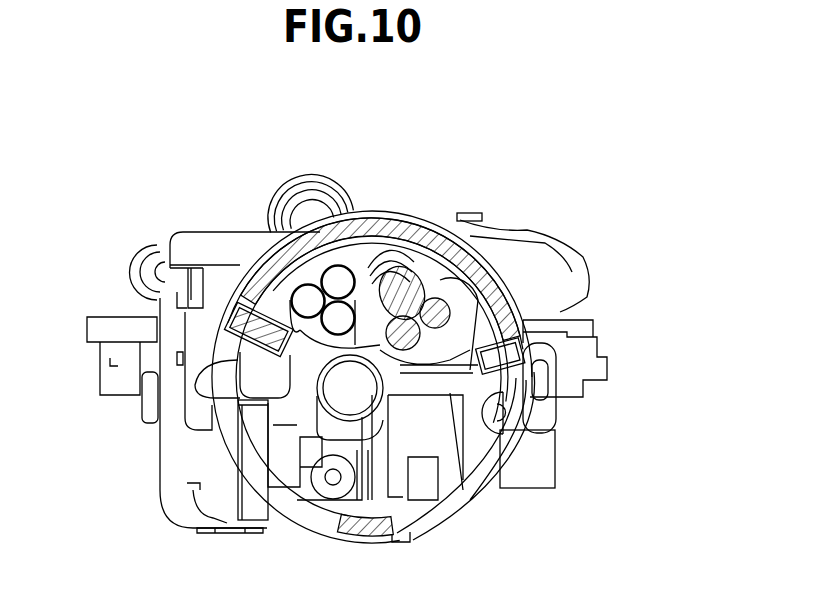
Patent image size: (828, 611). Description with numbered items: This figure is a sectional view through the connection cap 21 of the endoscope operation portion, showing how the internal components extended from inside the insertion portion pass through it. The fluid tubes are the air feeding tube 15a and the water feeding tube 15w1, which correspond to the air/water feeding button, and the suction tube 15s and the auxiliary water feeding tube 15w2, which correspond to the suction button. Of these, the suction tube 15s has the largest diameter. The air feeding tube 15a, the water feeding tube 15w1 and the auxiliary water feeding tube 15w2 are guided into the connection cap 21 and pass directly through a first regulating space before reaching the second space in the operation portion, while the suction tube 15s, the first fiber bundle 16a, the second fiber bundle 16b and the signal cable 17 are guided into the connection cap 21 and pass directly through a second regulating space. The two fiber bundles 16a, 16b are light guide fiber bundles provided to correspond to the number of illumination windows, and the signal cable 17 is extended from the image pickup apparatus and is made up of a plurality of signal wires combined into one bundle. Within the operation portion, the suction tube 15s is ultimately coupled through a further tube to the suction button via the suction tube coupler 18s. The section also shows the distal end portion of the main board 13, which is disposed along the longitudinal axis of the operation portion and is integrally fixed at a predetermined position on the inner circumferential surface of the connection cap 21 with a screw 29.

The main board 13 is at (510, 300).
The air feeding tube 15a is at (300, 290).
The suction tube 15s is at (414, 470).
The water feeding tube 15w1 is at (262, 326).
The auxiliary water feeding tube 15w2 is at (323, 268).
The first fiber bundle 16a is at (400, 282).
The second fiber bundle 16b is at (435, 300).
The signal cable 17 is at (425, 286).
The suction tube coupler 18s is at (375, 273).
The connection cap 21 is at (468, 217).
The screw 29 is at (258, 324).